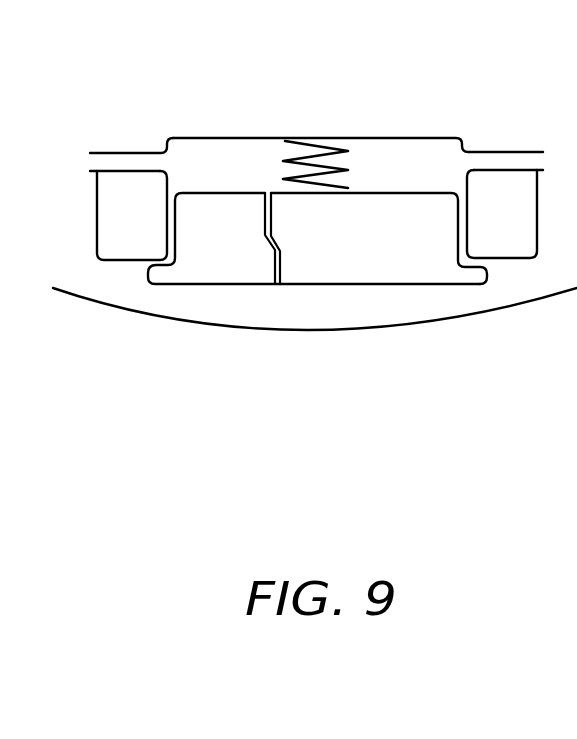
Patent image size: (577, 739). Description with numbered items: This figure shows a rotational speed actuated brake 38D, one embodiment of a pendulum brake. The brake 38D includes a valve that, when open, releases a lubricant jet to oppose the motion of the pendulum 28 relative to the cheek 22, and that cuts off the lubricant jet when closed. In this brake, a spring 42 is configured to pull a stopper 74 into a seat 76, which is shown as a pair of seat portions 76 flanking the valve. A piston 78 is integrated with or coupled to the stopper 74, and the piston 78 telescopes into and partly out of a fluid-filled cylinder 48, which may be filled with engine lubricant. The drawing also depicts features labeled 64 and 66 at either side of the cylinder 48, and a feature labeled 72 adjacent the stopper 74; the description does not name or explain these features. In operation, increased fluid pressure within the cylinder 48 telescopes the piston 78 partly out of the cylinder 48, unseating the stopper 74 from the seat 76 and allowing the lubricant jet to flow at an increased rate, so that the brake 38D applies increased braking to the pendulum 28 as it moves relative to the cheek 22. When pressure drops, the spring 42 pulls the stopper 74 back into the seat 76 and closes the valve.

The cheek 22 is at (116, 144).
The fluid-filled cylinder 48 is at (222, 137).
The spring 42 is at (350, 170).
The first lip 64 is at (86, 170).
The second lip 66 is at (571, 173).
The seat 76 is at (140, 226).
The piston 78 is at (310, 250).
The slot 72 is at (278, 292).
The stopper 74 is at (330, 292).
The pendulum 28 is at (68, 330).
The rotational speed actuated brake 38D is at (435, 340).